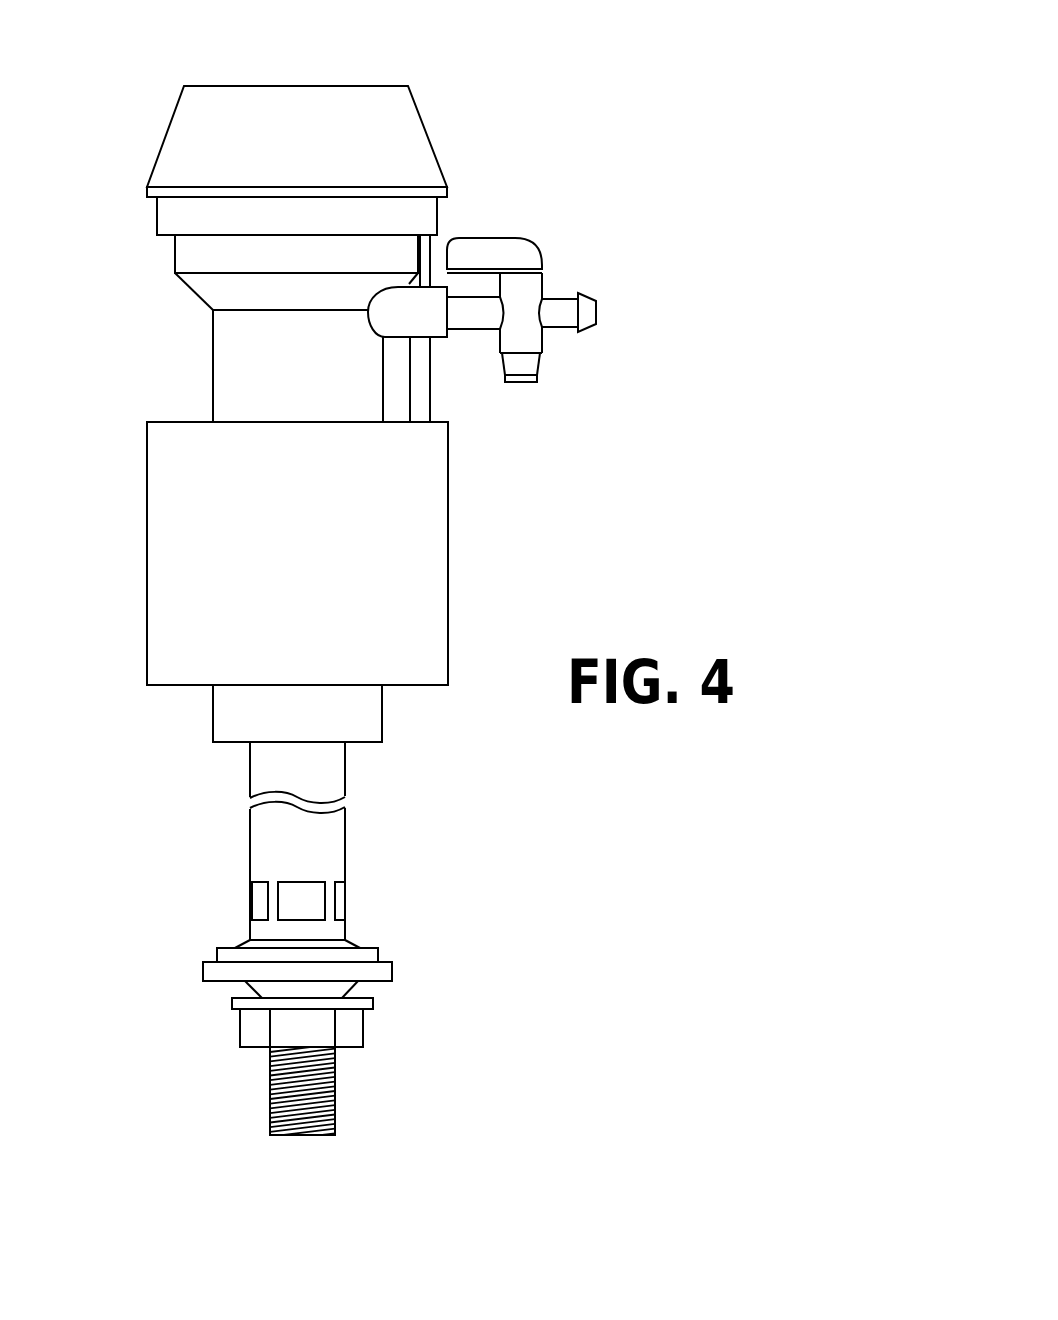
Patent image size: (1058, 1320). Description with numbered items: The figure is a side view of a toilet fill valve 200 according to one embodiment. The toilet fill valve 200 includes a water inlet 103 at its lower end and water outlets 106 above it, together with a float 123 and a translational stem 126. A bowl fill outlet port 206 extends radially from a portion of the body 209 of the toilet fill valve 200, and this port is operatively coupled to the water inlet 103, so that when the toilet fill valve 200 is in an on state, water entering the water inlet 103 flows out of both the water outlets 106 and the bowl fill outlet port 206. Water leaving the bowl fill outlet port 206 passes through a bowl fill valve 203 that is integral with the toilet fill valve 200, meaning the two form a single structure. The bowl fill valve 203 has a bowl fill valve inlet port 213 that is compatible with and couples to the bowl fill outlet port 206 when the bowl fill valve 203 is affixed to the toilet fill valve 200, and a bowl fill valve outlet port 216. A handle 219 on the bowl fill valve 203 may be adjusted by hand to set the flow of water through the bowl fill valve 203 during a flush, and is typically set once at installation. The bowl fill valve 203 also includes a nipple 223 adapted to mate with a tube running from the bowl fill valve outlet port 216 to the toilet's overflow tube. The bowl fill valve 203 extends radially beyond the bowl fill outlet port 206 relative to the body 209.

The toilet fill valve 200 is at (665, 117).
The body 209 is at (191, 338).
The bowl fill outlet port 206 is at (433, 297).
The translational stem 126 is at (418, 393).
The bowl fill valve inlet port 213 is at (458, 340).
The bowl fill valve 203 is at (559, 321).
The handle 219 is at (508, 250).
The nipple 223 is at (587, 305).
The bowl fill valve outlet port 216 is at (610, 313).
The float 123 is at (403, 560).
The water outlets 106 is at (303, 902).
The water inlet 103 is at (298, 1136).